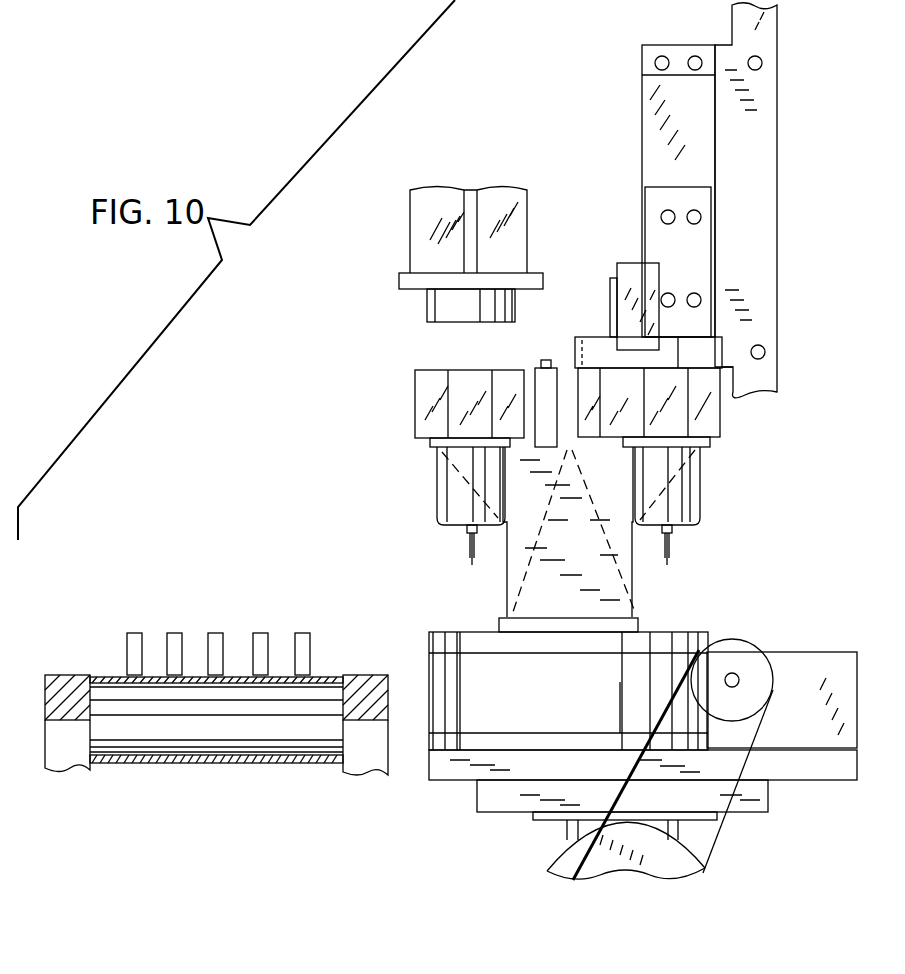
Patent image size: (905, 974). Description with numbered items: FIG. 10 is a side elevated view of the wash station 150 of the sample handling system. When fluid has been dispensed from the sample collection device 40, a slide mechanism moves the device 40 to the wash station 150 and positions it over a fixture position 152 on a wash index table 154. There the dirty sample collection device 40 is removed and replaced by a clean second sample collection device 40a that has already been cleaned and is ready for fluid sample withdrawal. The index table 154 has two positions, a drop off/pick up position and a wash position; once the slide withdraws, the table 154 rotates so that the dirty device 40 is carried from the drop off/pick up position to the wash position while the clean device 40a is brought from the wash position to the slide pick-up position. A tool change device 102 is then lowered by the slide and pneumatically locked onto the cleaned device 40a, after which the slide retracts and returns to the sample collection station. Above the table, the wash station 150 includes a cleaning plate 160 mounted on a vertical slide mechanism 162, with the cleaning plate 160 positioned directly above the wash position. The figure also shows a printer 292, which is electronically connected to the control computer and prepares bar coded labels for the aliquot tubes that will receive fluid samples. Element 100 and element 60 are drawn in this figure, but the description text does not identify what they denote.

The tool head 100 is at (447, 194).
The tool change device 102 is at (445, 298).
The wash station 150 is at (378, 303).
The fixture position 152 is at (463, 368).
The actuator housing 60 is at (427, 418).
The sample collection device 40 is at (455, 492).
The second sample collection device 40a is at (697, 500).
The wash index table 154 is at (458, 630).
The cleaning plate 160 is at (633, 272).
The vertical slide mechanism 162 is at (703, 242).
The printer 292 is at (307, 734).